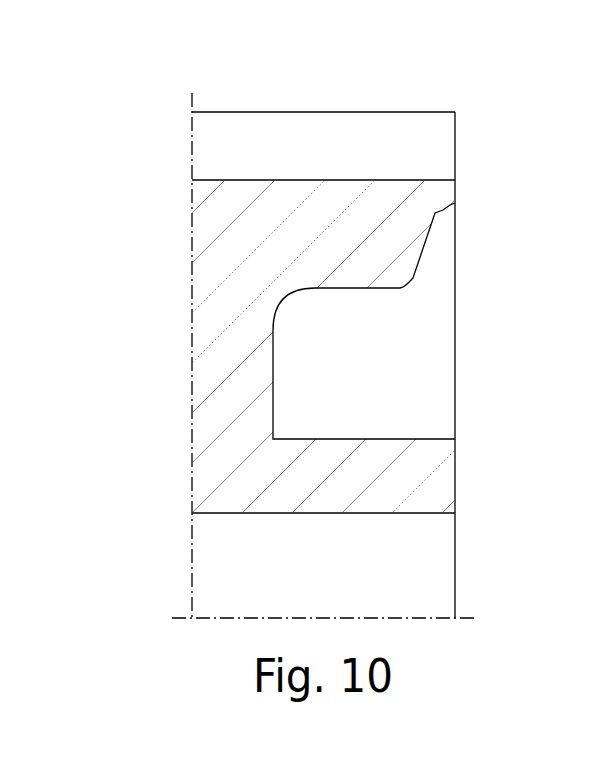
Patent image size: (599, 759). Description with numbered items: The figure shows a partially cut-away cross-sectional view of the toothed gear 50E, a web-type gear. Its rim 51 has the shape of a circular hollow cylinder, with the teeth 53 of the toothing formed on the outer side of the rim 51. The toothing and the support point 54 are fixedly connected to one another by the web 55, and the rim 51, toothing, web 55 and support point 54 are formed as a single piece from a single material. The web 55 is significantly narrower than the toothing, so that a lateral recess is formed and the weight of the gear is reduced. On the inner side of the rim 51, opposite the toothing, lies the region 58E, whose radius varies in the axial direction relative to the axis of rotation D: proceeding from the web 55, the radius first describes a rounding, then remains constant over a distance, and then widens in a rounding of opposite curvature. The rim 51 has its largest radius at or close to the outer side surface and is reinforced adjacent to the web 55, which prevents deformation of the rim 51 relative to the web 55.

The toothed gear 50E is at (299, 327).
The teeth 53 is at (296, 126).
The rim 51 is at (391, 180).
The web 55 is at (207, 327).
The support point 54 is at (207, 477).
The region 58E is at (430, 250).
The axis of rotation D is at (468, 617).